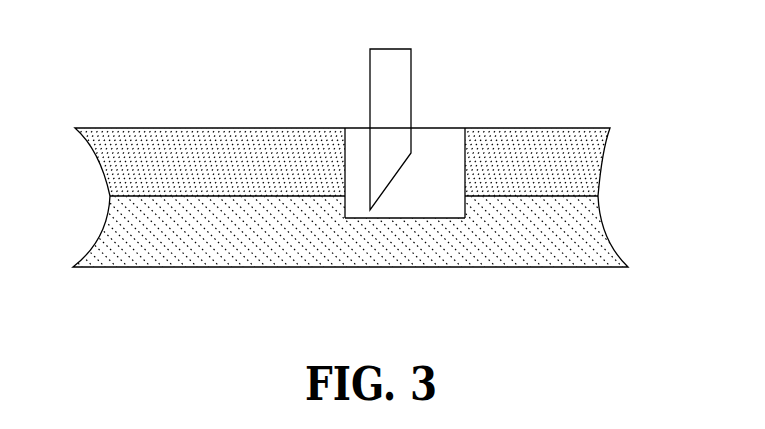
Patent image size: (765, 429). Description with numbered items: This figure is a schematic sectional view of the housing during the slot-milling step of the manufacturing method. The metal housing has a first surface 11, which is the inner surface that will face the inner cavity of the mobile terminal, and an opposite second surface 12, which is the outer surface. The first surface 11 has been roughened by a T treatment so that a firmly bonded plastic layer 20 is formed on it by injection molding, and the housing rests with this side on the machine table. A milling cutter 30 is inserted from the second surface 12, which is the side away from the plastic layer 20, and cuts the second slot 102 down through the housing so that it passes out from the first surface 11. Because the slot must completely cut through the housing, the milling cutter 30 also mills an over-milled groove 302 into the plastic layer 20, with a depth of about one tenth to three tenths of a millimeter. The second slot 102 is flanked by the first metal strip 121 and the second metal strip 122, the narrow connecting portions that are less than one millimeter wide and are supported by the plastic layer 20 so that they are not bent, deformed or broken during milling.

The first surface 11 is at (357, 228).
The second surface 12 is at (342, 128).
The first metal strip 121 is at (130, 147).
The second metal strip 122 is at (565, 140).
The second slot 102 is at (443, 171).
The over-milled groove 302 is at (449, 216).
The plastic layer 20 is at (593, 242).
The milling cutter 30 is at (382, 68).